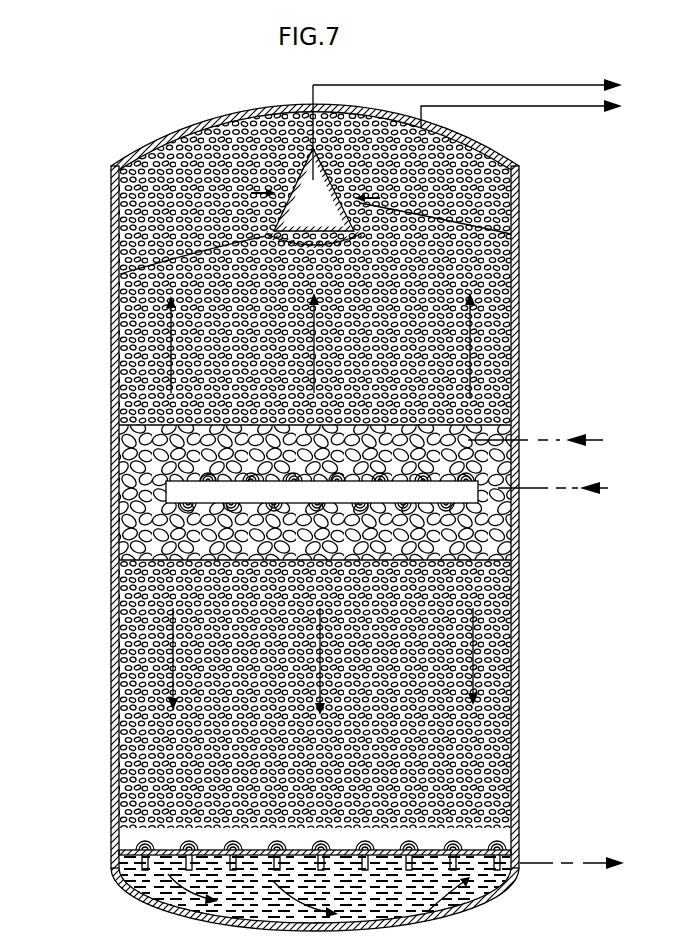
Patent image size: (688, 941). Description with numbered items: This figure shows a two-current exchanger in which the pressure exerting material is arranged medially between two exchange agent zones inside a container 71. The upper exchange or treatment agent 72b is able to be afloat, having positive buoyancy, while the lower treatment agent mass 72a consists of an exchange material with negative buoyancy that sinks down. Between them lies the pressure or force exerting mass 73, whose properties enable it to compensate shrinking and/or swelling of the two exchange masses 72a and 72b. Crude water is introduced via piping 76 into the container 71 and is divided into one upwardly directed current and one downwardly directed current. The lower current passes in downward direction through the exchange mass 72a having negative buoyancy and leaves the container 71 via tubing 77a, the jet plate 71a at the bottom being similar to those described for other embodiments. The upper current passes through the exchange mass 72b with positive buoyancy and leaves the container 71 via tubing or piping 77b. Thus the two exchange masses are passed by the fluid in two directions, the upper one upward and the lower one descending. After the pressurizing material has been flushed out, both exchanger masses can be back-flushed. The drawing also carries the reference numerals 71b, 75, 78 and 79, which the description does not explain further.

The container 71 is at (512, 732).
The jet plate 71a is at (503, 834).
The top inlet distributor cone 71b is at (303, 150).
The lower treatment agent mass 72a is at (490, 652).
The exchange or treatment agent 72b is at (485, 300).
The pressure or force exerting mass 73 is at (125, 450).
The horizontal baffle plate 75 is at (165, 488).
The piping 76 is at (556, 486).
The tubing 77a is at (578, 856).
The tubing or piping 77b is at (505, 77).
The side inlet line 78 is at (548, 432).
The top outlet line 79 is at (556, 98).